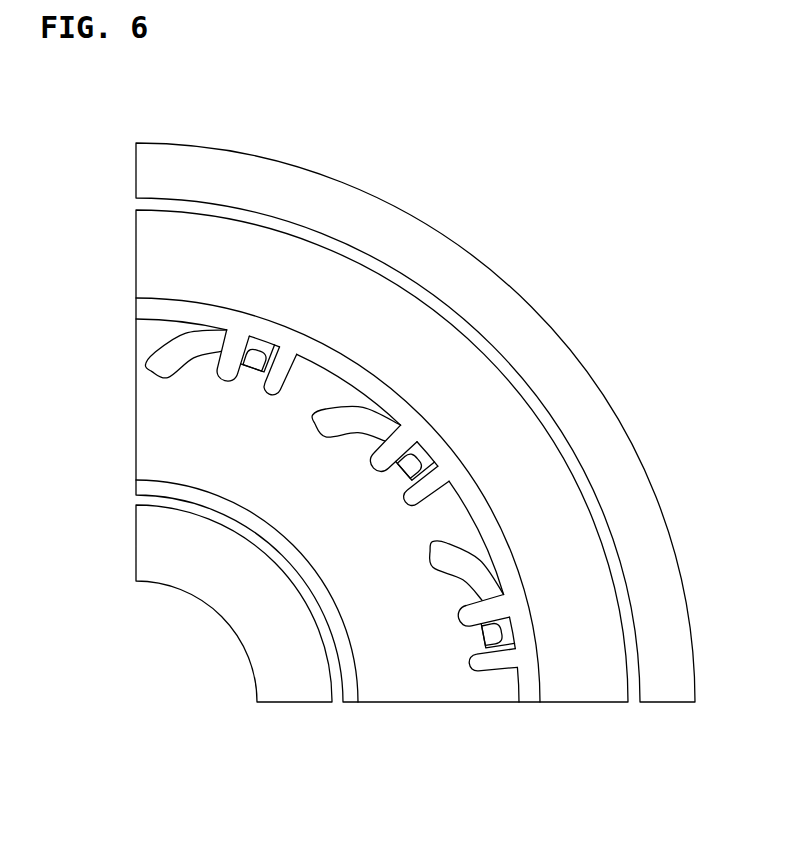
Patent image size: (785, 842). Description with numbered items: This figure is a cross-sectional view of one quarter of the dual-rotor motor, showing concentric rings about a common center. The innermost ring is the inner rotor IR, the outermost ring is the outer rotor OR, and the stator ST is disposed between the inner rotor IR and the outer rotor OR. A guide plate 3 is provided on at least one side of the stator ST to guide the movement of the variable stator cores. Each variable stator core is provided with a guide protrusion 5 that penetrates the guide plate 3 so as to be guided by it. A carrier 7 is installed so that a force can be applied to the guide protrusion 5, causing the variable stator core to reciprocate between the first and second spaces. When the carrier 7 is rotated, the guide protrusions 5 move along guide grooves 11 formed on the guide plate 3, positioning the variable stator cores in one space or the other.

The guide plate 3 is at (303, 383).
The guide protrusion 5 is at (262, 352).
The carrier 7 is at (493, 533).
The guide groove 11 is at (186, 338).
The inner rotor IR is at (293, 688).
The outer rotor OR is at (668, 688).
The stator ST is at (626, 714).